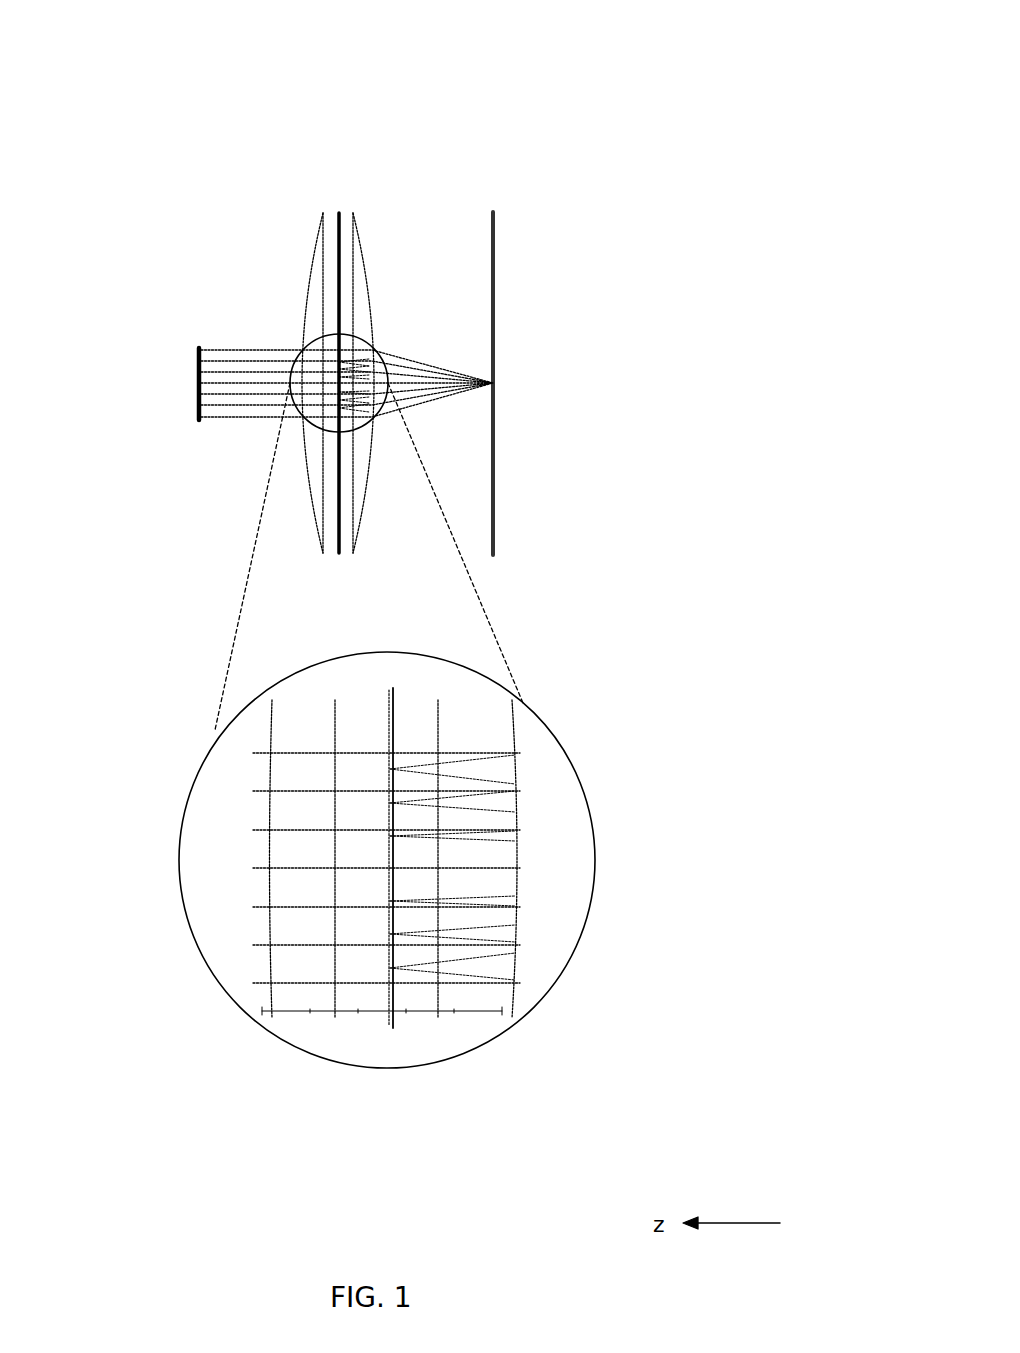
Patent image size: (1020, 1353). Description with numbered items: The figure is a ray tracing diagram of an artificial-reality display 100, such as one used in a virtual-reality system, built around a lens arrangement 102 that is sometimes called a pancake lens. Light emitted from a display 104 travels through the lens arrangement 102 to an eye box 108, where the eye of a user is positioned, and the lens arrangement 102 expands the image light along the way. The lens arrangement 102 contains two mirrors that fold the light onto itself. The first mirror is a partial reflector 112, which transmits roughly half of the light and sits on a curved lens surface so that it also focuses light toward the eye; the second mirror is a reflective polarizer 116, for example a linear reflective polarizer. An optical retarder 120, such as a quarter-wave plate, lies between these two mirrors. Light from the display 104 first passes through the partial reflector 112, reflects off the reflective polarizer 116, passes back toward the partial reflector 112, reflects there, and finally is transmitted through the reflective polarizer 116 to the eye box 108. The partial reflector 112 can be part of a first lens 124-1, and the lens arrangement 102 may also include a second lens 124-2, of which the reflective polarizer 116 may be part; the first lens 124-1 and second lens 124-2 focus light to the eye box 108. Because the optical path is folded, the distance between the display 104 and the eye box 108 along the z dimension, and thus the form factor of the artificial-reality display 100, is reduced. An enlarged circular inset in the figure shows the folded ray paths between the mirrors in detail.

The artificial-reality display 100 is at (657, 63).
The lens arrangement 102 is at (302, 132).
The display 104 is at (493, 265).
The eye box 108 is at (198, 405).
The partial reflector 112 is at (510, 769).
The reflective polarizer 116 is at (388, 1028).
The optical retarder 120 is at (442, 1090).
The first lens 124-1 is at (360, 502).
The second lens 124-2 is at (318, 512).